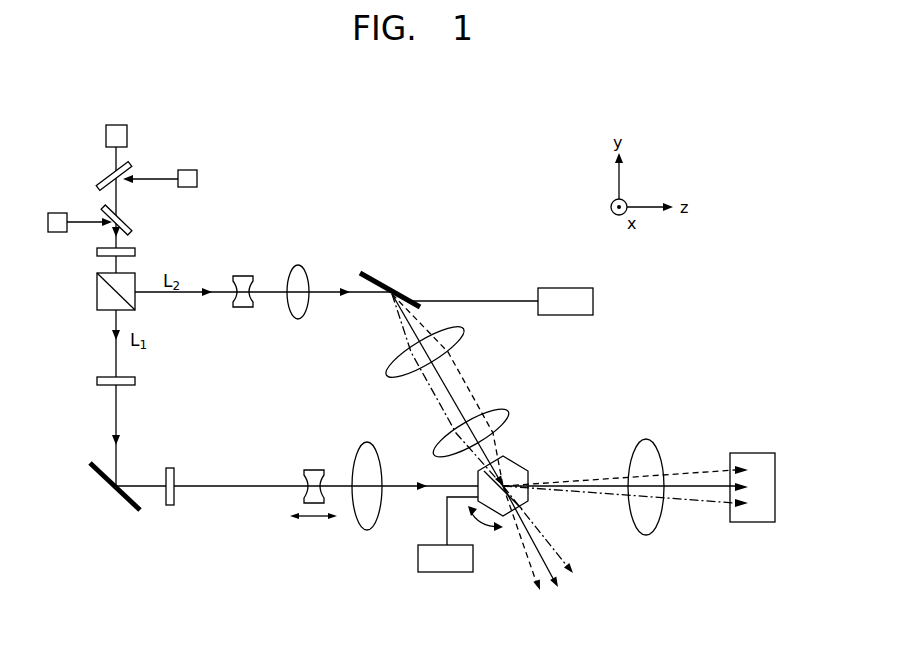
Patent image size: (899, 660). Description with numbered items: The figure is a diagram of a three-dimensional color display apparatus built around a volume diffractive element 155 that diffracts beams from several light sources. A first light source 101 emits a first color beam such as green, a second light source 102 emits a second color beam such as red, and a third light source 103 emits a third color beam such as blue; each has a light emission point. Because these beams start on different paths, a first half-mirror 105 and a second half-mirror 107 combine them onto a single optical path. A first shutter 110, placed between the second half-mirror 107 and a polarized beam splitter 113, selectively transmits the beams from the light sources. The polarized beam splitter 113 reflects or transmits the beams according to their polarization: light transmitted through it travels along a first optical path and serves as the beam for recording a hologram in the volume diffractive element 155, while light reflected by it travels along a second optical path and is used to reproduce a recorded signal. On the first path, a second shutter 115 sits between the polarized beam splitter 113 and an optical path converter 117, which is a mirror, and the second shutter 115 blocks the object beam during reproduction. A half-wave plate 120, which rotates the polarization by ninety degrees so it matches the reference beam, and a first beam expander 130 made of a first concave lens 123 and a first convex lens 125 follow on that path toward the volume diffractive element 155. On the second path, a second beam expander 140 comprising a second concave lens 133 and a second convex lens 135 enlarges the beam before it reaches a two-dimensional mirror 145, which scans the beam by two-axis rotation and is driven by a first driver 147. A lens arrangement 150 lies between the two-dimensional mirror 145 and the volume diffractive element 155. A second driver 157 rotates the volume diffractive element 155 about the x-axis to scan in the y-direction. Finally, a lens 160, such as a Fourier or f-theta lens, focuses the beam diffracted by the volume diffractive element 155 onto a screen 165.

The first light source 101 is at (117, 124).
The second light source 102 is at (188, 169).
The third light source 103 is at (57, 212).
The first half-mirror 105 is at (102, 177).
The second half-mirror 107 is at (131, 222).
The first shutter 110 is at (96, 252).
The polarized beam splitter 113 is at (96, 291).
The second shutter 115 is at (96, 380).
The optical path converter 117 is at (97, 477).
The half-wave plate 120 is at (171, 467).
The first concave lens 123 is at (313, 469).
The first convex lens 125 is at (367, 466).
The first beam expander 130 is at (336, 447).
The second concave lens 133 is at (243, 275).
The second convex lens 135 is at (298, 271).
The second beam expander 140 is at (270, 251).
The two-dimensional mirror 145 is at (380, 278).
The first driver 147 is at (565, 287).
The lens arrangement 150 is at (466, 322).
The volume diffractive element 155 is at (516, 464).
The second driver 157 is at (447, 574).
The lens 160 is at (646, 439).
The screen 165 is at (752, 452).